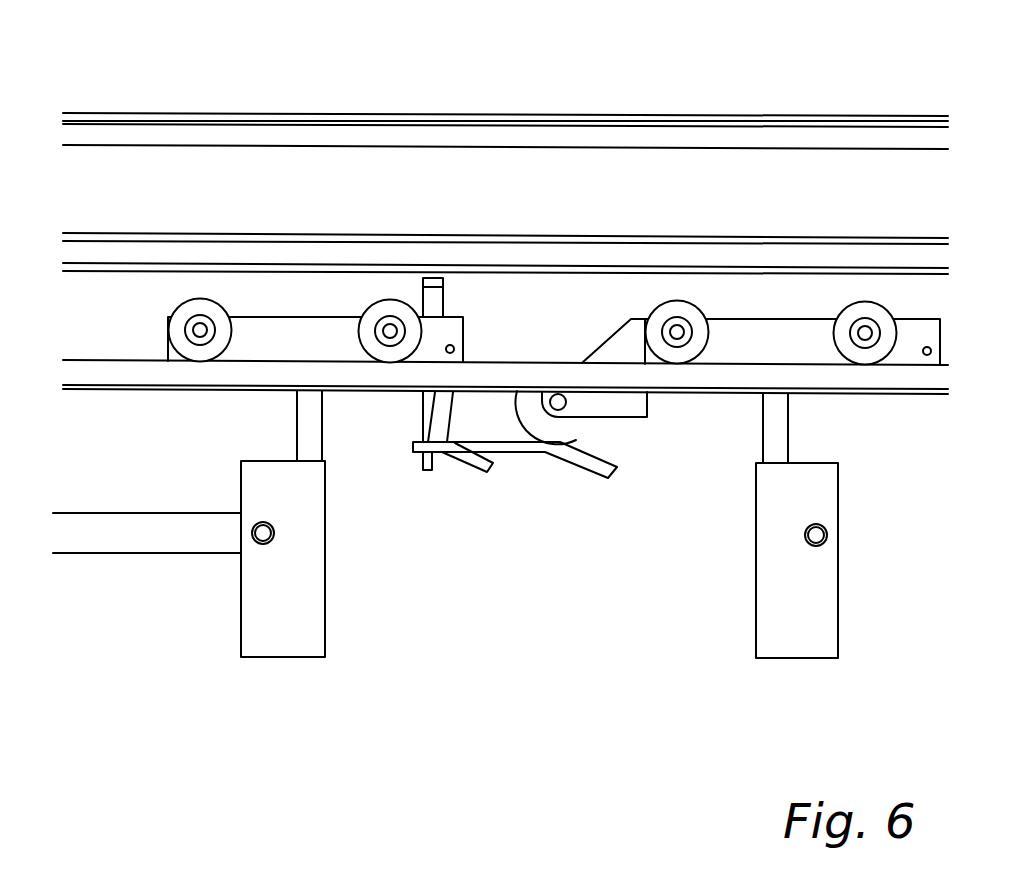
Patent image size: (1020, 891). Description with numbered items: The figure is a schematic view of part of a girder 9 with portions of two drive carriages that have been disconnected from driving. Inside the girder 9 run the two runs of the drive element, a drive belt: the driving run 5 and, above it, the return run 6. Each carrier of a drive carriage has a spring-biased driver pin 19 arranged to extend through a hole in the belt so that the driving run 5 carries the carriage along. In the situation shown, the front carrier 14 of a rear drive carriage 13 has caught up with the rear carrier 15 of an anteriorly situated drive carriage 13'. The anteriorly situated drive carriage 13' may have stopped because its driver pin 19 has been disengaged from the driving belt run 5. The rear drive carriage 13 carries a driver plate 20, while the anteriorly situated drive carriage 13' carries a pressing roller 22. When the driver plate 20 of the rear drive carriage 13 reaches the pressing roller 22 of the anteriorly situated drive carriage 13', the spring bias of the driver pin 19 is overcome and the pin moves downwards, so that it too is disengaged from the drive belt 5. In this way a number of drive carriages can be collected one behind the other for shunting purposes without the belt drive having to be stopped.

The girder 9 is at (305, 113).
The return run 6 is at (593, 236).
The driving run 5 is at (654, 265).
The front carrier 14 is at (333, 346).
The driver pin 19 is at (443, 302).
The rear carrier 15 is at (780, 342).
The rear drive carriage 13 is at (189, 570).
The anteriorly situated drive carriage 13' is at (798, 570).
The driver plate 20 is at (563, 455).
The pressing roller 22 is at (585, 418).